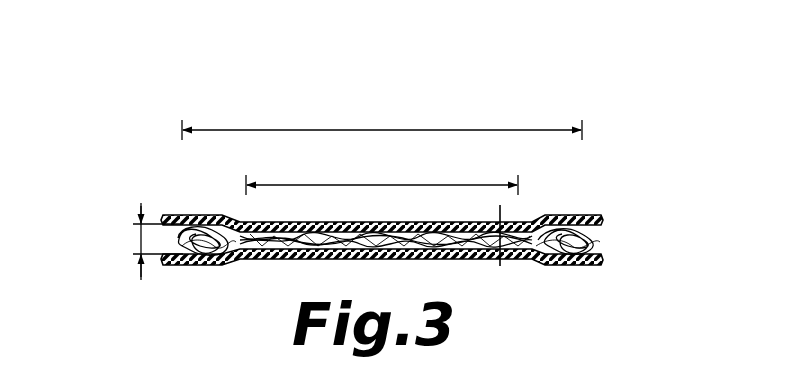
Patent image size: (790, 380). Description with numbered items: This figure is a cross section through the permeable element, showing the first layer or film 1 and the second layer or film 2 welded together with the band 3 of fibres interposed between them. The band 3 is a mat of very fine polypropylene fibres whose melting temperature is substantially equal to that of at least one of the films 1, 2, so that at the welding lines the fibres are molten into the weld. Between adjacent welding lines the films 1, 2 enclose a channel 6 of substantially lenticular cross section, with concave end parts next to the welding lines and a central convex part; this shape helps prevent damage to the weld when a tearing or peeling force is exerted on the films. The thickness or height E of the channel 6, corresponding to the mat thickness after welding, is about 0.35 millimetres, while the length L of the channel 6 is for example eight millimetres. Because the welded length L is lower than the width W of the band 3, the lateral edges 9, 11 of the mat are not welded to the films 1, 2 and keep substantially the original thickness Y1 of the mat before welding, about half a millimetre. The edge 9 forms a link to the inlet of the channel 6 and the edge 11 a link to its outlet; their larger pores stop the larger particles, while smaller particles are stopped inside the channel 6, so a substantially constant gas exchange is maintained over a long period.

The first layer or film 1 is at (567, 259).
The second layer or film 2 is at (568, 221).
The band of fibres 3 is at (207, 249).
The channel 6 is at (393, 261).
The lateral edge of the mat of fibres 9 is at (198, 228).
The lateral edge of the mat of fibres 11 is at (607, 240).
The width of the band W is at (375, 130).
The length of the channel L is at (381, 185).
The thickness of the mat before welding Y1 is at (141, 238).
The thickness or height of the channel E is at (500, 266).